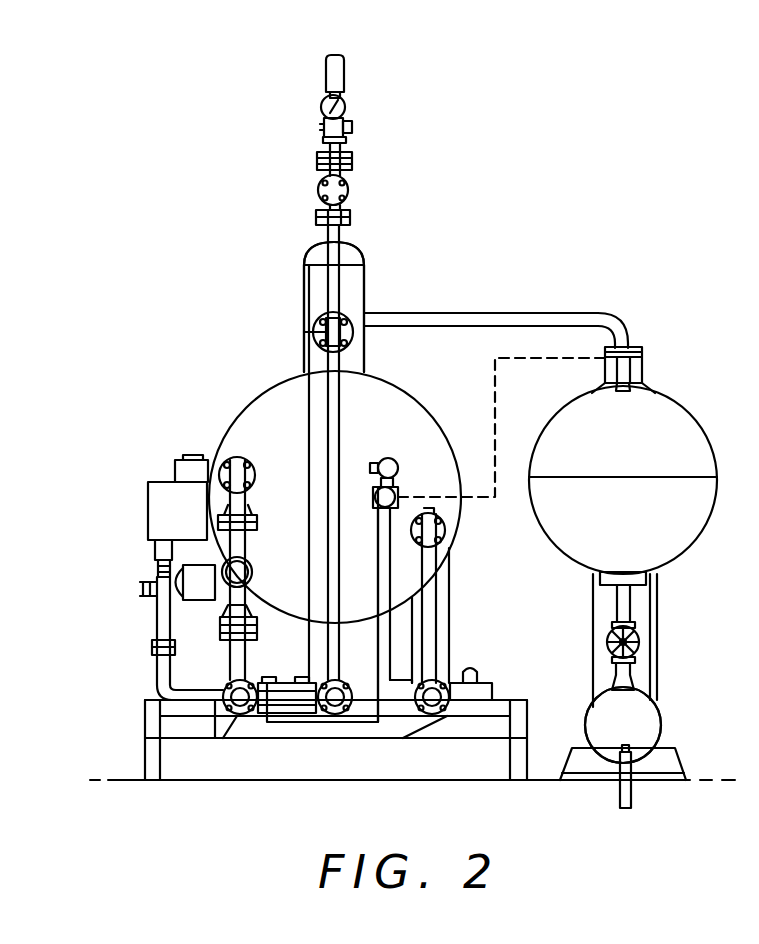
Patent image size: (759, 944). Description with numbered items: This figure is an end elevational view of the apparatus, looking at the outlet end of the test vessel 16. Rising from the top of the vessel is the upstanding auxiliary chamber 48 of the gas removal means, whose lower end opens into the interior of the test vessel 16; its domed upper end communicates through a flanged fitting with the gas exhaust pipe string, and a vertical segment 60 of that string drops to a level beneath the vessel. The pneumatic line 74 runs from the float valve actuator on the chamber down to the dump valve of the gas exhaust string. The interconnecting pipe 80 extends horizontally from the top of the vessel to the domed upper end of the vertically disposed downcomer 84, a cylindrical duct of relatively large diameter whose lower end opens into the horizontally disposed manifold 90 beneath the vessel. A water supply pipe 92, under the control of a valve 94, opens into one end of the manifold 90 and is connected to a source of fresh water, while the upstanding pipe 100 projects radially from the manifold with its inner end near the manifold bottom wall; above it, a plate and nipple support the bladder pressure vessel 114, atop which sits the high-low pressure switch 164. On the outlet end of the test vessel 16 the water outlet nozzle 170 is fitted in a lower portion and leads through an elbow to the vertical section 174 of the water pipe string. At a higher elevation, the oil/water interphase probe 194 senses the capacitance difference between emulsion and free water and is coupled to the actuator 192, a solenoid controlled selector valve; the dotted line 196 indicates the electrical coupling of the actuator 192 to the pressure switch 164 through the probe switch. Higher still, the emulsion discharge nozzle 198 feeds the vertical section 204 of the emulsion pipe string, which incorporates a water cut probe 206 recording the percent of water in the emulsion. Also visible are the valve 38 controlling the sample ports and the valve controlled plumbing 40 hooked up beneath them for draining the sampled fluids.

The test vessel 16 is at (253, 391).
The valve 38 is at (194, 456).
The valve controlled plumbing 40 is at (148, 634).
The auxiliary chamber 48 is at (357, 288).
The vertical segment 60 is at (304, 277).
The pneumatic line 74 is at (300, 356).
The interconnecting pipe 80 is at (460, 313).
The downcomer 84 is at (650, 592).
The manifold 90 is at (590, 712).
The water supply pipe 92 is at (619, 790).
The valve 94 is at (662, 744).
The upstanding pipe 100 is at (638, 690).
The pressure vessel 114 is at (674, 393).
The high-low pressure switch 164 is at (643, 361).
The water outlet nozzle 170 is at (453, 524).
The vertical section 174 is at (450, 616).
The actuator 192 is at (372, 502).
The oil/water interphase probe 194 is at (403, 489).
The dotted line 196 is at (524, 356).
The emulsion discharge nozzle 198 is at (242, 458).
The vertical section 204 is at (222, 503).
The water cut probe 206 is at (164, 574).